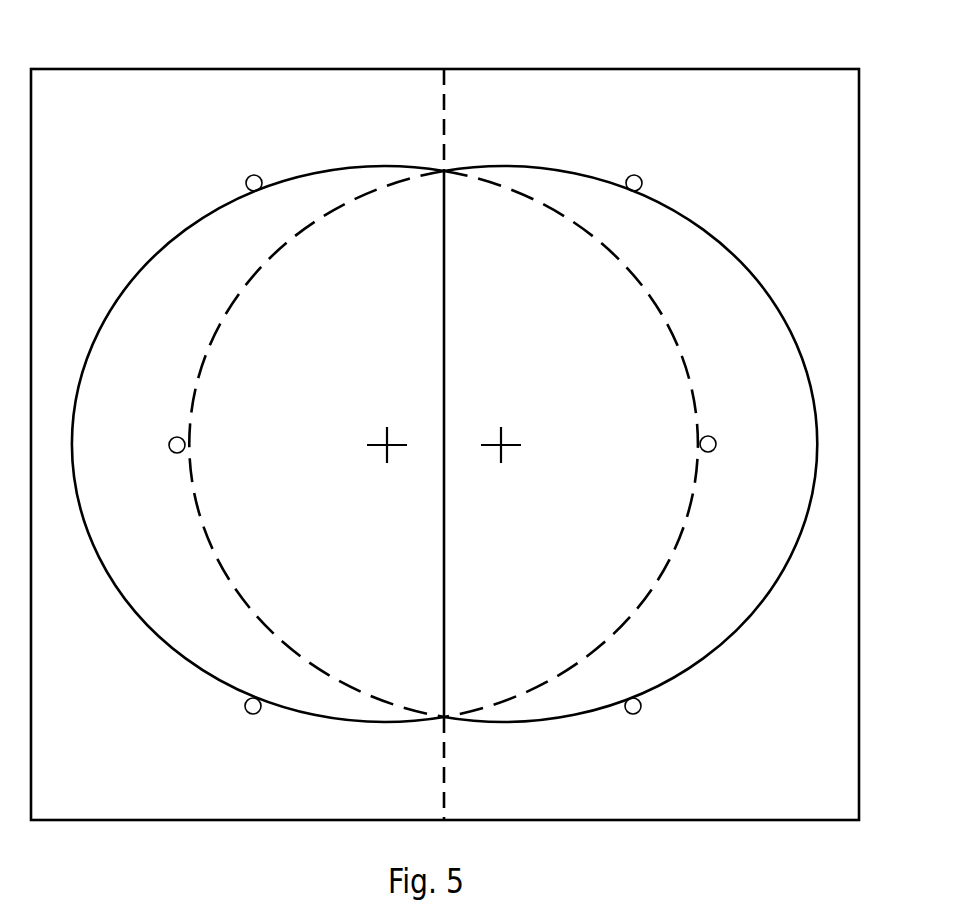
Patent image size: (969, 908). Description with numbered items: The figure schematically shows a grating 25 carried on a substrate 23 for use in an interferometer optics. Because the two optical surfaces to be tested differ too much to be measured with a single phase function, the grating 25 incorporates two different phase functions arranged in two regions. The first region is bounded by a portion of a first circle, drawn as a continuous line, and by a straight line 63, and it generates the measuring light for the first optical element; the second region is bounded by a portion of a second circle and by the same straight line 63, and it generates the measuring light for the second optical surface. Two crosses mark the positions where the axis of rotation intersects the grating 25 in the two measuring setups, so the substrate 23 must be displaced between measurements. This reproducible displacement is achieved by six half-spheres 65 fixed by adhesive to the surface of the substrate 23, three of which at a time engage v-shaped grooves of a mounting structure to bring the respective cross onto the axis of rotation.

The substrate 23 is at (744, 68).
The grating 25 is at (444, 401).
The straight line 63 is at (445, 292).
The half-spheres 65 is at (246, 181).